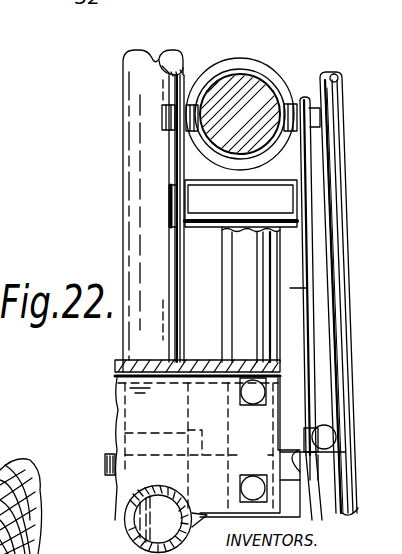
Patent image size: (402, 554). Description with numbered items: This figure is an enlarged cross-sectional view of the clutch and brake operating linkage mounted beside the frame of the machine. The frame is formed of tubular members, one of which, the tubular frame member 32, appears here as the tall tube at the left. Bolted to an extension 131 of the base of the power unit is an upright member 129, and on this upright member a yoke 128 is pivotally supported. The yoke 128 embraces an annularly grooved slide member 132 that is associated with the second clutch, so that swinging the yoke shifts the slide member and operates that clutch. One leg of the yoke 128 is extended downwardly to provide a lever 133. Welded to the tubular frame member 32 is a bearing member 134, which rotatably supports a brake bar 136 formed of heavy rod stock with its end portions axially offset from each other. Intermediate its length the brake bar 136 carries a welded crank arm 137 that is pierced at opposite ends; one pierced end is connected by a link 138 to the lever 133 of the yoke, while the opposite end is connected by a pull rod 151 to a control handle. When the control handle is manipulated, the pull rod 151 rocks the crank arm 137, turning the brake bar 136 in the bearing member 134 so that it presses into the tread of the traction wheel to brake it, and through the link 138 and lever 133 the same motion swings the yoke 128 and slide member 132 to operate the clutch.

The tubular frame member 32 is at (122, 534).
The yoke 128 is at (188, 98).
The upright member 129 is at (236, 262).
The extension 131 is at (117, 362).
The slide member 132 is at (283, 76).
The lever 133 is at (265, 282).
The bearing member 134 is at (118, 438).
The brake bar 136 is at (105, 465).
The crank arm 137 is at (300, 472).
The link 138 is at (283, 450).
The pull rod 151 is at (333, 72).